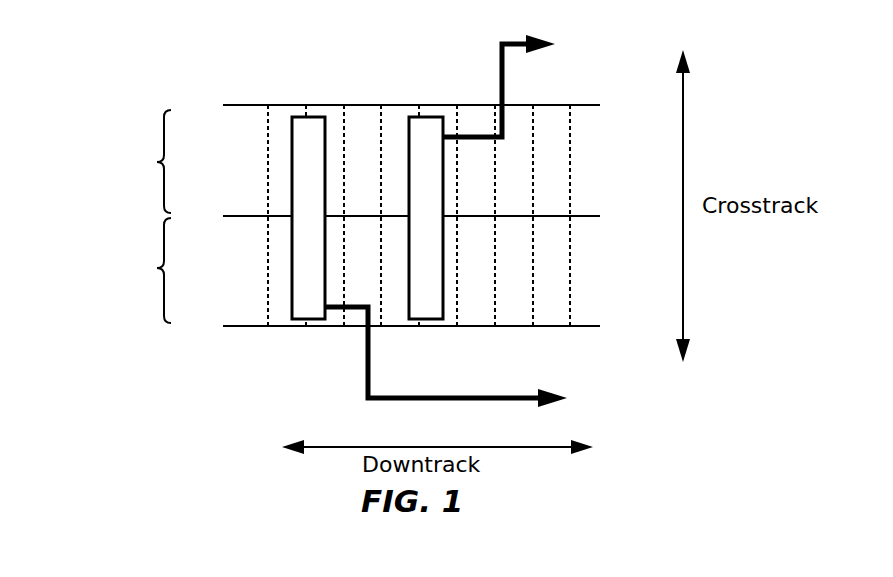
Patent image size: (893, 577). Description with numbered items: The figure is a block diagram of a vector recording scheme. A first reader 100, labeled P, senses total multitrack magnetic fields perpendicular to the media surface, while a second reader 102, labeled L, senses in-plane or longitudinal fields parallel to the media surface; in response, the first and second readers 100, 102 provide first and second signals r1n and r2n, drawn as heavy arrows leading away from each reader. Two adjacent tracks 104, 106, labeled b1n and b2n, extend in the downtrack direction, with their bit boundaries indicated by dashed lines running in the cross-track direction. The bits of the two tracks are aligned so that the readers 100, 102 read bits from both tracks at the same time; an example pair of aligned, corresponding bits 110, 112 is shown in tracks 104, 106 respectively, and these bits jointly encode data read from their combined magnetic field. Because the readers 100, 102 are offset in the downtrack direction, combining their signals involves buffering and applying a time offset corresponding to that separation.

The first reader 100 is at (311, 116).
The second reader 102 is at (426, 116).
The track 104 is at (157, 162).
The track 106 is at (157, 268).
The bit 110 is at (552, 157).
The bit 112 is at (552, 267).